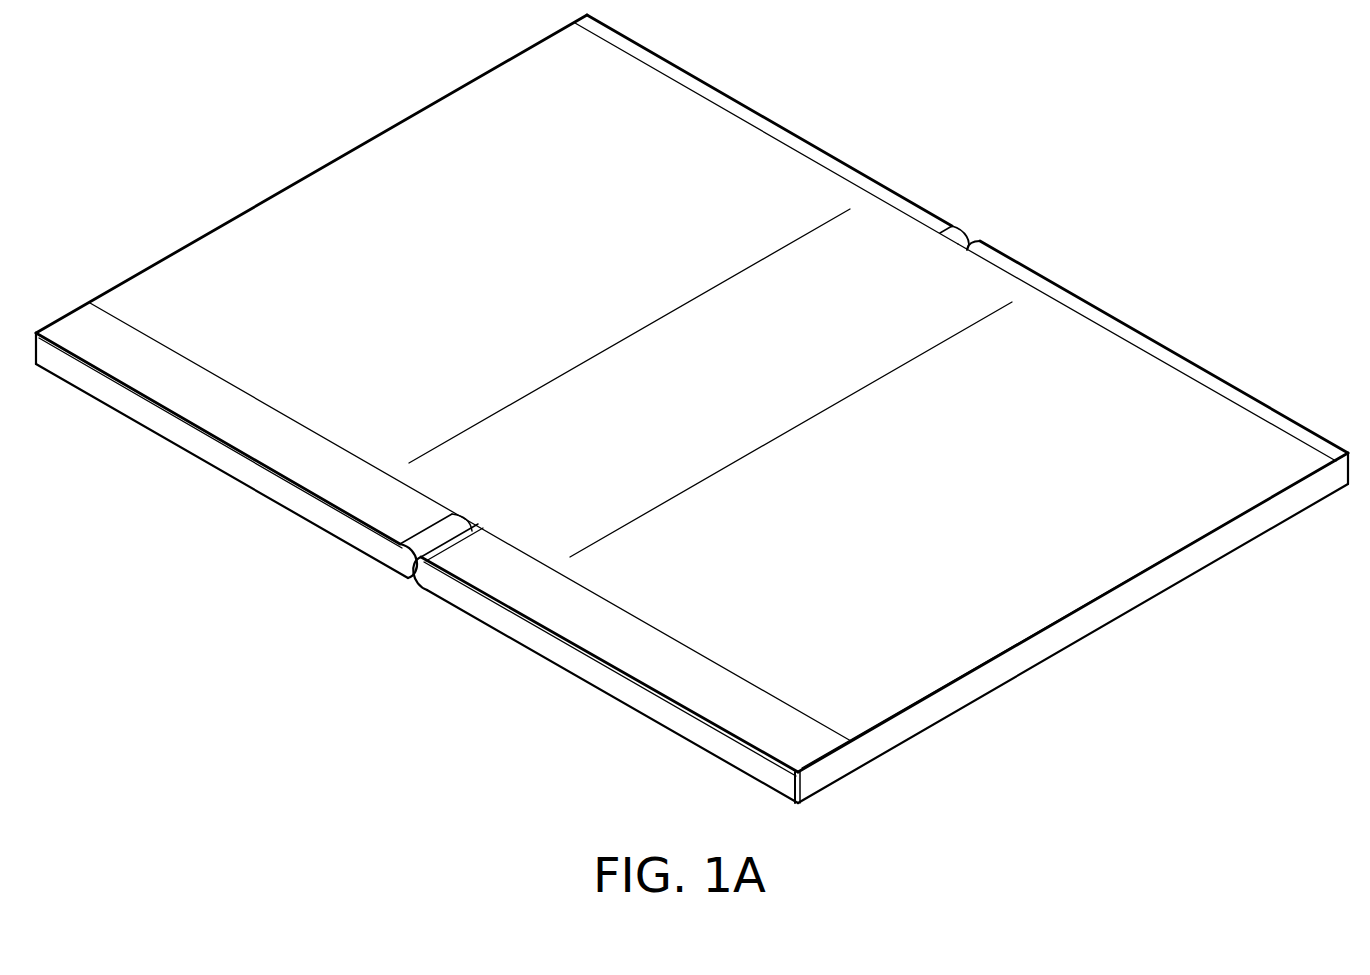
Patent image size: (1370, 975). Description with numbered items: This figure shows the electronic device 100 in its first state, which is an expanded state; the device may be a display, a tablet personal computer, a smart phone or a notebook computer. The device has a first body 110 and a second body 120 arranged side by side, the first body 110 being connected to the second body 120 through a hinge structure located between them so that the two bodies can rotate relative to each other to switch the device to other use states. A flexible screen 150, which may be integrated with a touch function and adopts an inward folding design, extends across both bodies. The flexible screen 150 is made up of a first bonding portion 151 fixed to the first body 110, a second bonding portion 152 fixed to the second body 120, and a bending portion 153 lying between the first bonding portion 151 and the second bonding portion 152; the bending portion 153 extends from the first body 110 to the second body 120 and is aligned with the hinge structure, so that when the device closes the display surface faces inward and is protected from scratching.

The electronic device 100 is at (693, 410).
The first body 110 is at (600, 680).
The second body 120 is at (260, 483).
The flexible screen 150 is at (720, 382).
The first bonding portion 151 is at (1098, 388).
The second bonding portion 152 is at (735, 158).
The bending portion 153 is at (907, 290).